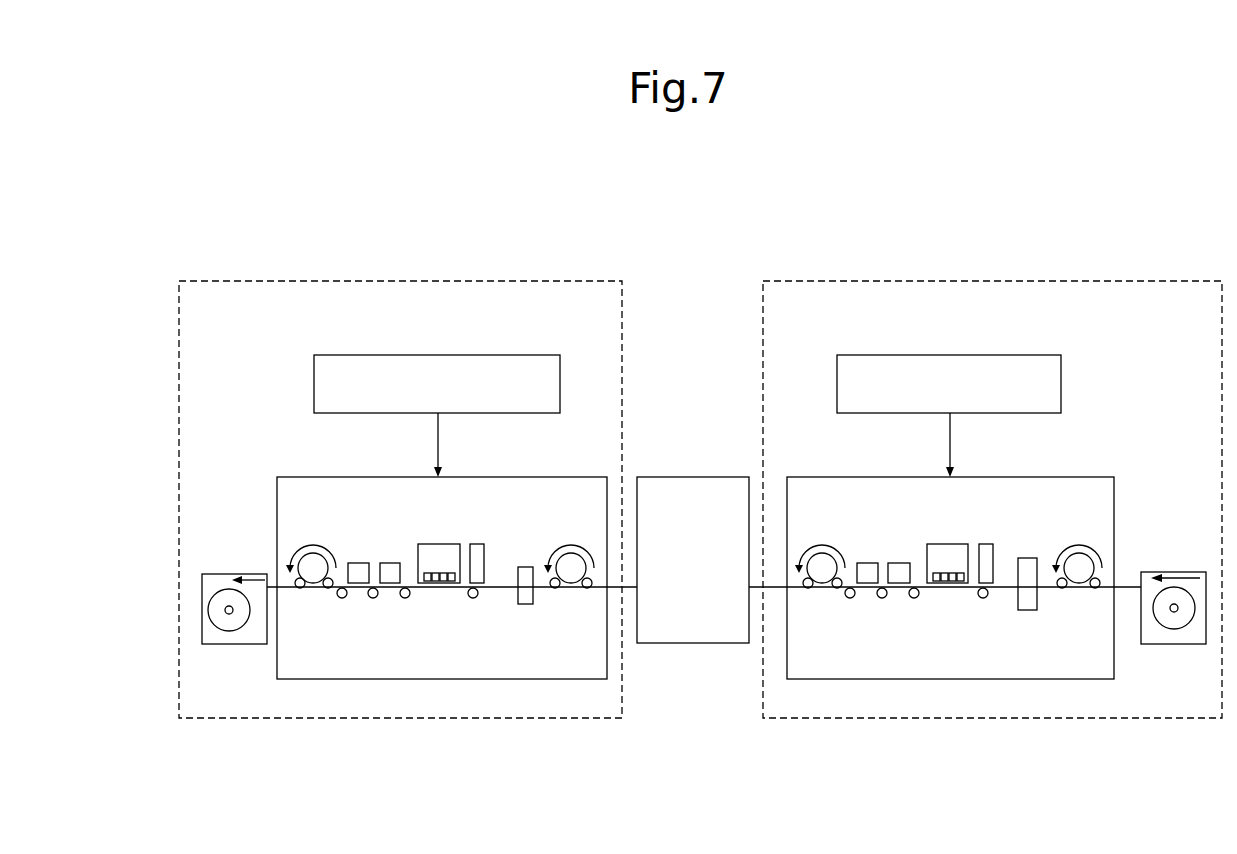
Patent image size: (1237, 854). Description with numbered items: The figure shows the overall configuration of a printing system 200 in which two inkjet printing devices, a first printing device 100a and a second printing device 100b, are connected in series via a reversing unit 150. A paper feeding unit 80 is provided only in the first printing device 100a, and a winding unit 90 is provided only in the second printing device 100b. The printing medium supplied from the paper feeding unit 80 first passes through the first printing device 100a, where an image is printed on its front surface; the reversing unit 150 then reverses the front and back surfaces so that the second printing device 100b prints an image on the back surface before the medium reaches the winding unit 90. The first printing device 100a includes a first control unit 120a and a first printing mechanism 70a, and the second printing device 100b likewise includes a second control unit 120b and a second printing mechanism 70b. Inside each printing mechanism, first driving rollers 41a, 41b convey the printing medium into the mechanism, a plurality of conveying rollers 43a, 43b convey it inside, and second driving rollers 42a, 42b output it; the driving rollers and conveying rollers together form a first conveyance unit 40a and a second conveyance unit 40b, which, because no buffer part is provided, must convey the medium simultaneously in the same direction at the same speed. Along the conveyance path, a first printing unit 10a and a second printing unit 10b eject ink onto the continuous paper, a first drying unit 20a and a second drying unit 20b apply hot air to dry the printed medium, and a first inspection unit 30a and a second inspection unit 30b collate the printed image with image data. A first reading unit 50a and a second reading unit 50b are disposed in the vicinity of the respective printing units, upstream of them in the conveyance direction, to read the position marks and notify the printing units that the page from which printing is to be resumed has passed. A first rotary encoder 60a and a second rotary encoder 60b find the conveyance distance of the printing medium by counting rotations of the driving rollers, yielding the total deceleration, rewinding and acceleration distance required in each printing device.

The printing system 200 is at (1097, 184).
The first printing device 100a is at (1140, 279).
The second printing device 100b is at (286, 279).
The first control unit 120a is at (950, 353).
The second control unit 120b is at (438, 353).
The first printing mechanism 70a is at (1081, 477).
The second printing mechanism 70b is at (287, 477).
The reversing unit 150 is at (667, 477).
The first printing unit 10a is at (945, 543).
The second printing unit 10b is at (436, 543).
The first drying unit 20a is at (897, 562).
The second drying unit 20b is at (388, 562).
The first inspection unit 30a is at (862, 562).
The second inspection unit 30b is at (352, 562).
The first conveyance unit 40a is at (1086, 538).
The second conveyance unit 40b is at (575, 538).
The first driving roller 41a is at (1078, 592).
The first driving roller 41b is at (571, 592).
The second driving roller 42a is at (822, 588).
The second driving roller 42b is at (313, 588).
The conveying rollers 43a is at (850, 598).
The conveying rollers 43b is at (342, 598).
The first reading unit 50a is at (985, 543).
The second reading unit 50b is at (478, 543).
The first rotary encoder 60a is at (1028, 557).
The second rotary encoder 60b is at (524, 566).
The paper feeding unit 80 is at (1174, 646).
The winding unit 90 is at (230, 645).